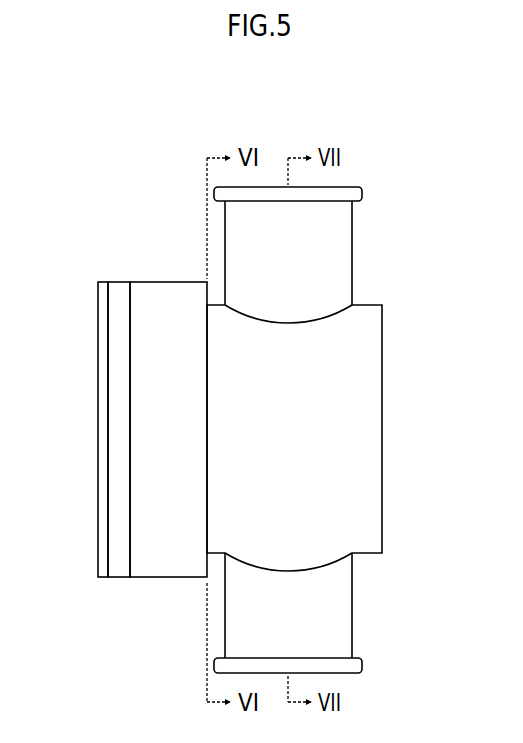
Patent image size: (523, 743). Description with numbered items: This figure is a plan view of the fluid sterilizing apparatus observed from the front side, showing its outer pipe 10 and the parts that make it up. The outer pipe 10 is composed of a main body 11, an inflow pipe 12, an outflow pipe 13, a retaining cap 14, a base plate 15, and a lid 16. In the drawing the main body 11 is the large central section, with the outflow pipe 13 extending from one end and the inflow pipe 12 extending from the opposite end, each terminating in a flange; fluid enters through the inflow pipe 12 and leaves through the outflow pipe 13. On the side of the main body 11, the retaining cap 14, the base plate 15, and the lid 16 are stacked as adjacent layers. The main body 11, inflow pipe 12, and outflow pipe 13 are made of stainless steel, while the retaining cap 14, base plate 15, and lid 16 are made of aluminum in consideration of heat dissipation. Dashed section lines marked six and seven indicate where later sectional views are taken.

The outer pipe 10 is at (429, 175).
The main body 11 is at (373, 380).
The inflow pipe 12 is at (343, 605).
The outflow pipe 13 is at (343, 239).
The retaining cap 14 is at (162, 286).
The base plate 15 is at (120, 287).
The lid 16 is at (100, 340).